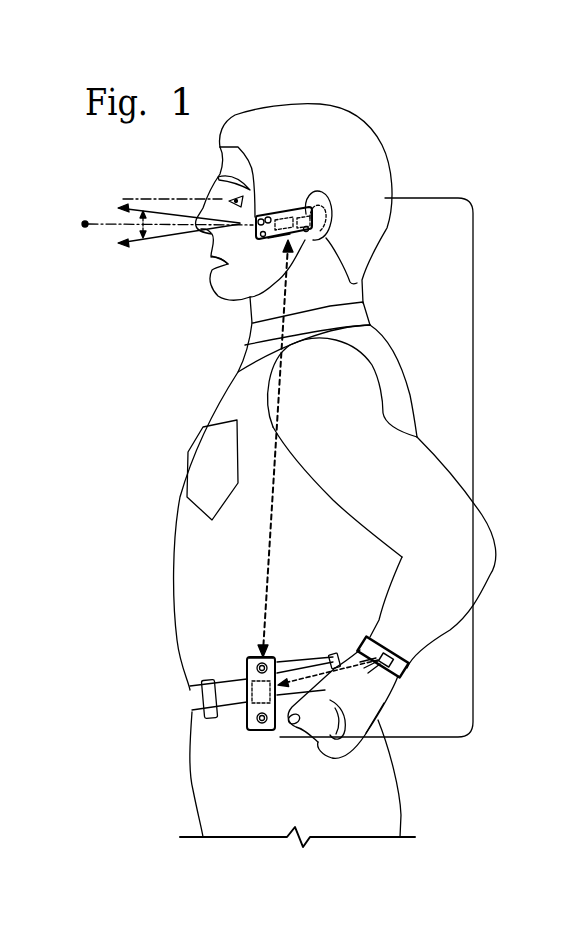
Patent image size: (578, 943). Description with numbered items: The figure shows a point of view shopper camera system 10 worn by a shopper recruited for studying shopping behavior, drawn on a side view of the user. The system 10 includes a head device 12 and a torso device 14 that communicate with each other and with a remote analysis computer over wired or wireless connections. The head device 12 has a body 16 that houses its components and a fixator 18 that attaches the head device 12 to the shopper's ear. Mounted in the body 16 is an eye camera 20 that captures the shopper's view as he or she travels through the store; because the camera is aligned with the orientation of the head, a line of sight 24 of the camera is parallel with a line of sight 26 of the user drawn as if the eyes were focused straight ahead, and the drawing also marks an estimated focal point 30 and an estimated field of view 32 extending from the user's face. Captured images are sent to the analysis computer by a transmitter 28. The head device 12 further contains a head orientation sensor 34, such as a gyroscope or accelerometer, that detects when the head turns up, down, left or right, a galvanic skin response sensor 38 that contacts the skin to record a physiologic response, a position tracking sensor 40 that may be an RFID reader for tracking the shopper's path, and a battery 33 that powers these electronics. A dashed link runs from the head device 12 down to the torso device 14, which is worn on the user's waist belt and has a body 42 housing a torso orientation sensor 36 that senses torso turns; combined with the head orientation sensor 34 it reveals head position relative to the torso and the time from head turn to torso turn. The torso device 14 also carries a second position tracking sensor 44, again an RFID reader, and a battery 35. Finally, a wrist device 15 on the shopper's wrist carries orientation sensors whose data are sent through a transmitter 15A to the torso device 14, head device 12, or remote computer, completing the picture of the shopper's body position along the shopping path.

The point of view shopper camera system 10 is at (473, 502).
The head device 12 is at (311, 239).
The torso device 14 is at (287, 661).
The wrist device 15 is at (396, 675).
The transmitter 15A is at (388, 655).
The body 16 is at (280, 238).
The fixator 18 is at (318, 192).
The eye camera 20 is at (261, 219).
The line of sight of the camera 24 is at (96, 221).
The line of sight of the user 26 is at (158, 199).
The transmitter 28 is at (293, 217).
The estimated focal point 30 is at (86, 228).
The estimated field of view 32 is at (142, 236).
The battery 33 is at (310, 216).
The head orientation sensor 34 is at (268, 217).
The battery 35 is at (250, 686).
The torso orientation sensor 36 is at (256, 667).
The galvanic skin response sensor 38 is at (309, 228).
The position tracking sensor 40 is at (262, 237).
The body 42 is at (255, 657).
The position tracking sensor 44 is at (257, 722).